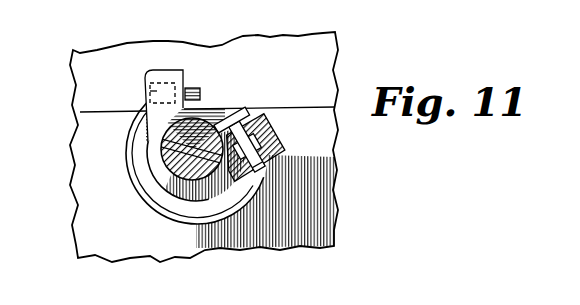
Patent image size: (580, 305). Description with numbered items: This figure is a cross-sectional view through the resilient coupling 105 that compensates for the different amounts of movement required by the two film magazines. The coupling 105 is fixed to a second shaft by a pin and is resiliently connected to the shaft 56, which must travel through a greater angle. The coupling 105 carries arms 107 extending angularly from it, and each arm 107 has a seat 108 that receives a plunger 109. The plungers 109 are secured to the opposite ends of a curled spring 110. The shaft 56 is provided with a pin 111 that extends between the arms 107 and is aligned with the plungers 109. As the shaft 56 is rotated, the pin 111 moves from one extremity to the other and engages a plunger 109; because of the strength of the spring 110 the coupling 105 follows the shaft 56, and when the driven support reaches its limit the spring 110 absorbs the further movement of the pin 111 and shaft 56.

The shaft 56 is at (209, 178).
The coupling 105 is at (178, 197).
The arm 107 is at (158, 75).
The seat 108 is at (152, 90).
The plunger 109 is at (257, 113).
The curled spring 110 is at (143, 206).
The pin 111 is at (233, 112).